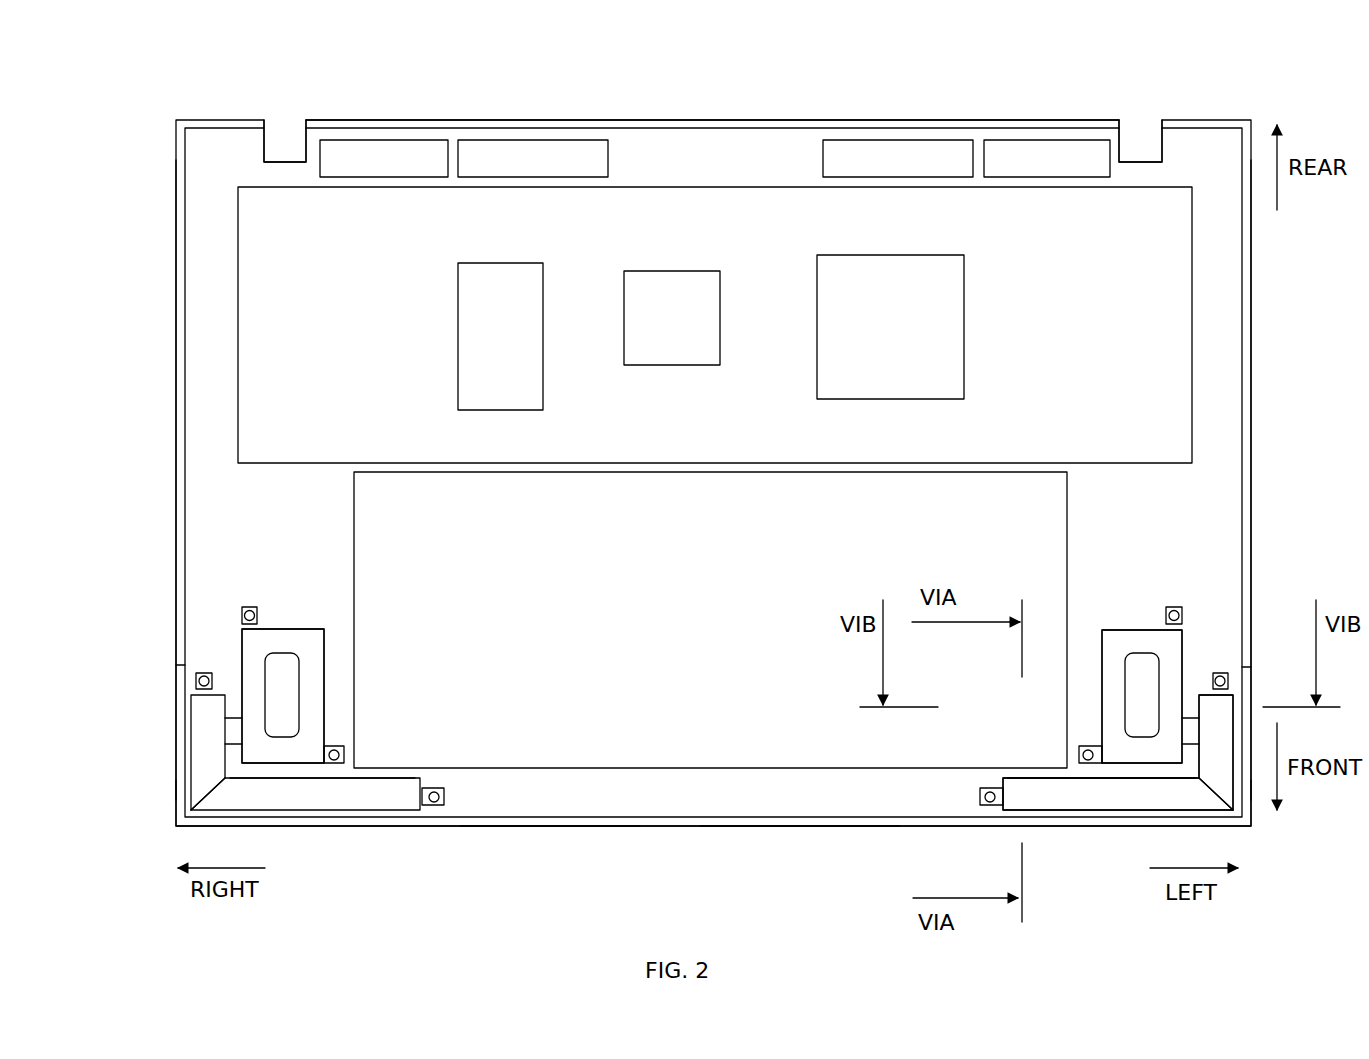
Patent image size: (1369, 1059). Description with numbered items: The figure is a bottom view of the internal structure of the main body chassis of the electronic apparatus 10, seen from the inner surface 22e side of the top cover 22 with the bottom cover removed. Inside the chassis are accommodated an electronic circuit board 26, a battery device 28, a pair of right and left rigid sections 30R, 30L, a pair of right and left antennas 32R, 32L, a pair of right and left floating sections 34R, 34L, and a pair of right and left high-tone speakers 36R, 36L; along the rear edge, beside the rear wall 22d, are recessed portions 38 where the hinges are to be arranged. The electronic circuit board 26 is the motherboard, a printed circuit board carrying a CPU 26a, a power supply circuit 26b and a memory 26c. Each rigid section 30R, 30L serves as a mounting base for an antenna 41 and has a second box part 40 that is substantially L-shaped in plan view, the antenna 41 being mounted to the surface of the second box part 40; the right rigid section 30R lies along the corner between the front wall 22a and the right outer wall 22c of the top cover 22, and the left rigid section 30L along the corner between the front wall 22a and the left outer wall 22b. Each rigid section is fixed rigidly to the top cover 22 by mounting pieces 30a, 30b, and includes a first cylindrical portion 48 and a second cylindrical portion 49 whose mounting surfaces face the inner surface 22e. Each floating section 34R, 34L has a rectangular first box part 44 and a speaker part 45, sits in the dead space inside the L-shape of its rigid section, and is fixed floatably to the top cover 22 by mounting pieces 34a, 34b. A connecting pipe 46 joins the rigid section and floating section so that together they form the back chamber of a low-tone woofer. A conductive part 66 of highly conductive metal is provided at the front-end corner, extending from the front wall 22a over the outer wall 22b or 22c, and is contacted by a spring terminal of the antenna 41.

The electronic apparatus 10 is at (132, 79).
The top cover 22 is at (728, 118).
The front wall 22a is at (758, 827).
The left outer wall 22b is at (1247, 473).
The right outer wall 22c is at (177, 445).
The rear side wall 22d is at (798, 120).
The inner surface 22e is at (562, 822).
The electronic circuit board 26 is at (1172, 360).
The CPU 26a is at (667, 350).
The power supply circuit 26b is at (470, 348).
The memory 26c is at (943, 340).
The battery device 28 is at (680, 740).
The right rigid section 30R is at (726, 724).
The left rigid section 30L is at (1118, 819).
The mounting piece 30a is at (200, 672).
The mounting piece 30b is at (435, 806).
The right antenna 32R is at (540, 155).
The left antenna 32L is at (907, 155).
The right floating section 34R is at (297, 626).
The left floating section 34L is at (1128, 628).
The mounting piece 34a is at (252, 606).
The mounting piece 34b is at (337, 745).
The right high-tone speaker 36R is at (403, 153).
The left high-tone speaker 36L is at (1043, 155).
The recessed portion 38 is at (268, 135).
The second box part 40 is at (290, 795).
The antenna 41 is at (208, 757).
The first box part 44 is at (318, 695).
The speaker part 45 is at (285, 677).
The connecting pipe 46 is at (233, 717).
The first cylindrical portion 48 is at (205, 723).
The second cylindrical portion 49 is at (390, 795).
The conductive part 66 is at (177, 787).